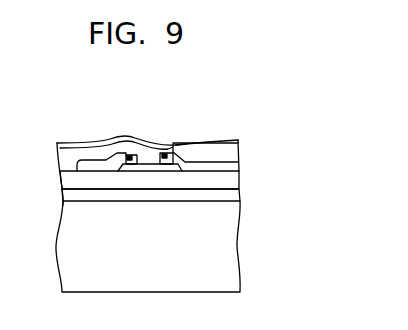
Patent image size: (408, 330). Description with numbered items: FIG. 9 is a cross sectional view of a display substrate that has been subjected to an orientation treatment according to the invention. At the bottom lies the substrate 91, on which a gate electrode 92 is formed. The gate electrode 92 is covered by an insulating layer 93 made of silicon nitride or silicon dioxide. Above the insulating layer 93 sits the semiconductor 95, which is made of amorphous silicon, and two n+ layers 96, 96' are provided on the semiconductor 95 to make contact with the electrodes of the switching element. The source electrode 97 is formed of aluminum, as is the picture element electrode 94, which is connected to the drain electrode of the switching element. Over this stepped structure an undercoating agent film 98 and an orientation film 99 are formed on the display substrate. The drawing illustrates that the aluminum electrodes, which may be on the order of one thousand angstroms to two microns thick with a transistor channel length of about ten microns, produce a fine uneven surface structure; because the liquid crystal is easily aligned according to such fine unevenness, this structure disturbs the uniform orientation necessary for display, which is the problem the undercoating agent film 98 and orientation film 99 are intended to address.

The substrate 91 is at (227, 232).
The gate electrode 92 is at (230, 197).
The insulating layer 93 is at (230, 180).
The picture element electrode 94 is at (228, 165).
The semiconductor 95 is at (150, 168).
The n+ layer 96 is at (187, 130).
The n+ layer 96' is at (129, 130).
The source electrode 97 is at (90, 165).
The undercoating agent film 98 is at (229, 150).
The orientation film 99 is at (182, 143).